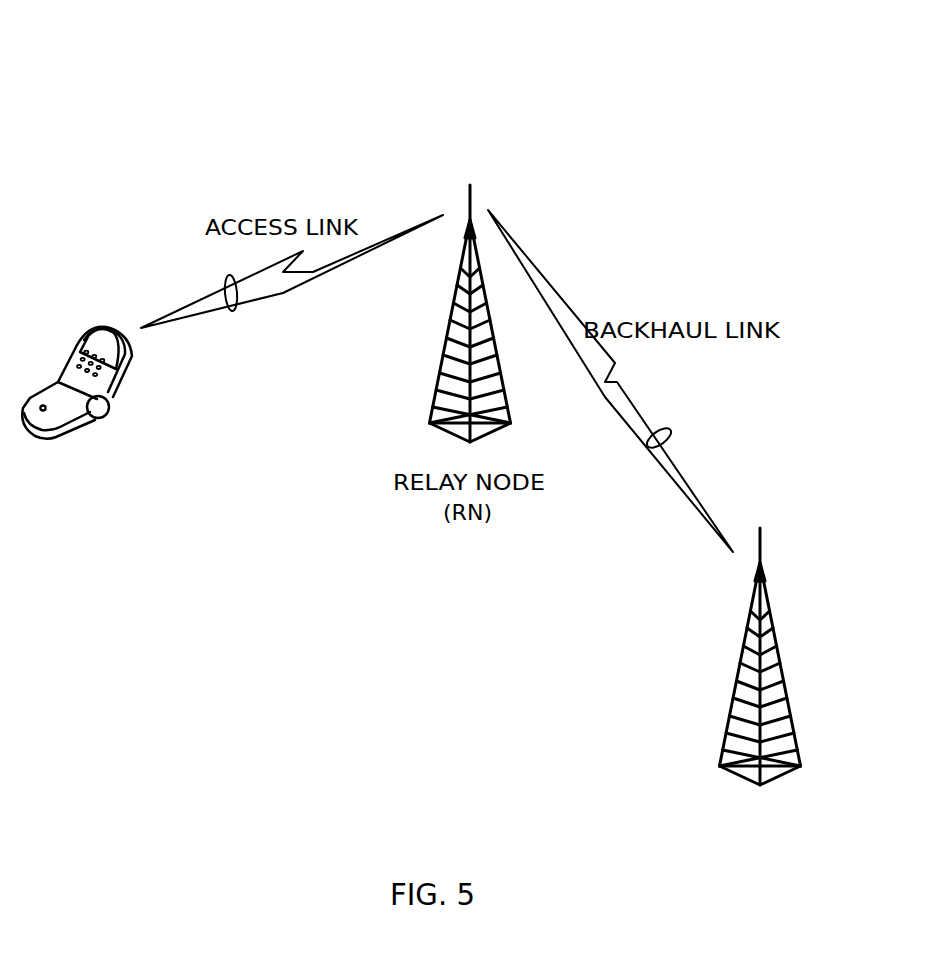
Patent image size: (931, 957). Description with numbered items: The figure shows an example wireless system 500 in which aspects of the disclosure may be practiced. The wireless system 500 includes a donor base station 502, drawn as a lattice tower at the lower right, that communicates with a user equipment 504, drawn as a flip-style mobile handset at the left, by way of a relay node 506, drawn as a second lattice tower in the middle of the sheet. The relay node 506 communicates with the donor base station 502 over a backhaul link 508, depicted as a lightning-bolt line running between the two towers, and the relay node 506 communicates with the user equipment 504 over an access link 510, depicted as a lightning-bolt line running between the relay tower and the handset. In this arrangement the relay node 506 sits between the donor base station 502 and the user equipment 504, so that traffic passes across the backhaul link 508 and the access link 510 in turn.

The wireless system 500 is at (76, 46).
The donor base station 502 is at (785, 667).
The user equipment 504 is at (73, 352).
The relay node 506 is at (447, 331).
The backhaul link 508 is at (650, 452).
The access link 510 is at (231, 311).